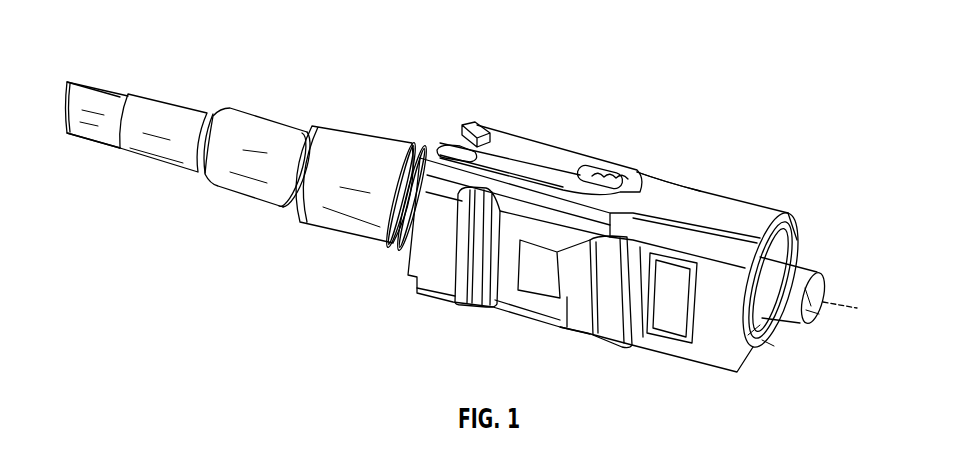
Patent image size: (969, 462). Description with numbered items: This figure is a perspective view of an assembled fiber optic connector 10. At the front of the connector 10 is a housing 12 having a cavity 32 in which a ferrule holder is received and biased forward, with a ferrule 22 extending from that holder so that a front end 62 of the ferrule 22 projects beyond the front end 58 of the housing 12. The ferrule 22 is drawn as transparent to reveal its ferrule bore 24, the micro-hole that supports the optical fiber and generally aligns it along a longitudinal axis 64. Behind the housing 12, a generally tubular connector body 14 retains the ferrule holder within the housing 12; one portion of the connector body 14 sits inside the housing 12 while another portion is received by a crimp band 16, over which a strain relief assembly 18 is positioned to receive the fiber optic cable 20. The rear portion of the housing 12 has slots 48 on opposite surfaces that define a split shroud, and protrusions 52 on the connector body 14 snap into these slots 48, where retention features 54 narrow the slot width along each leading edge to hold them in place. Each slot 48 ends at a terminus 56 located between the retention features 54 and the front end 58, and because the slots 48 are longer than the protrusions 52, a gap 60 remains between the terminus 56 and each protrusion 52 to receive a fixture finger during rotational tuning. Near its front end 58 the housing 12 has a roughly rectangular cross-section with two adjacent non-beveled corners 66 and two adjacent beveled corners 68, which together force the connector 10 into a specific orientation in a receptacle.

The connector 10 is at (503, 57).
The housing 12 is at (713, 180).
The connector body 14 is at (397, 257).
The crimp band 16 is at (367, 123).
The strain relief assembly 18 is at (232, 103).
The fiber optic cable 20 is at (100, 87).
The ferrule 22 is at (797, 258).
The ferrule bore 24 is at (813, 297).
The cavity 32 is at (768, 345).
The slots 48 is at (597, 172).
The protrusions 52 is at (532, 163).
The retention features 54 is at (480, 133).
The terminus 56 is at (630, 180).
The front end 58 is at (790, 227).
The gap 60 is at (607, 186).
The front end 62 is at (812, 317).
The longitudinal axis 64 is at (848, 310).
The non-beveled corners 66 is at (752, 332).
The beveled corners 68 is at (792, 232).